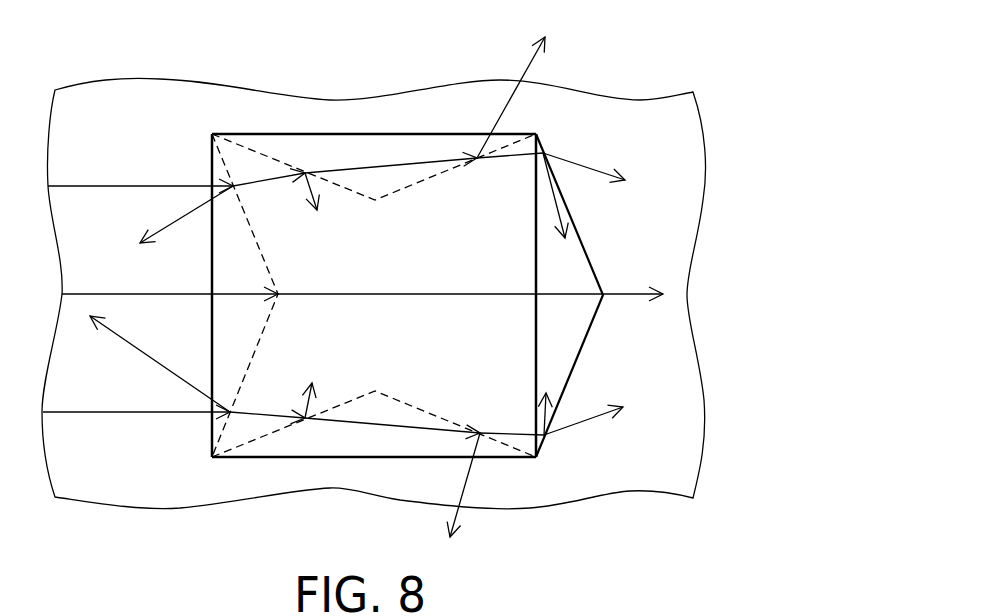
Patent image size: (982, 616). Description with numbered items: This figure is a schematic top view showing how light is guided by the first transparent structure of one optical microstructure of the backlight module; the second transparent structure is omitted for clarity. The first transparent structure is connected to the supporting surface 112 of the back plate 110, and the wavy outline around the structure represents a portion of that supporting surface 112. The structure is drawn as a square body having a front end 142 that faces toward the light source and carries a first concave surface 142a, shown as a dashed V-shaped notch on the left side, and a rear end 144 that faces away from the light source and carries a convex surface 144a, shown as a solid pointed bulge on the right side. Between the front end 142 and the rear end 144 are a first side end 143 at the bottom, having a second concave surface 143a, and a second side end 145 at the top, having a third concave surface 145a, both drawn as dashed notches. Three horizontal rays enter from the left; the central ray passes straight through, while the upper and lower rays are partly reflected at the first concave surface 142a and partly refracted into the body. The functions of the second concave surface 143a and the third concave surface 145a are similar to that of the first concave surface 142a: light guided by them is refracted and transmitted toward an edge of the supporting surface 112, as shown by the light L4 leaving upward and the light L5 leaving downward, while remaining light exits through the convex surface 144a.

The back plate 110 is at (677, 144).
The supporting surface 112 is at (594, 127).
The front end 142 is at (213, 346).
The first concave surface 142a is at (258, 247).
The first side end 143 is at (352, 458).
The second concave surface 143a is at (260, 437).
The rear end 144 is at (537, 352).
The convex surface 144a is at (588, 255).
The second side end 145 is at (413, 132).
The third concave surface 145a is at (268, 157).
The light L4 is at (503, 105).
The light L5 is at (470, 478).